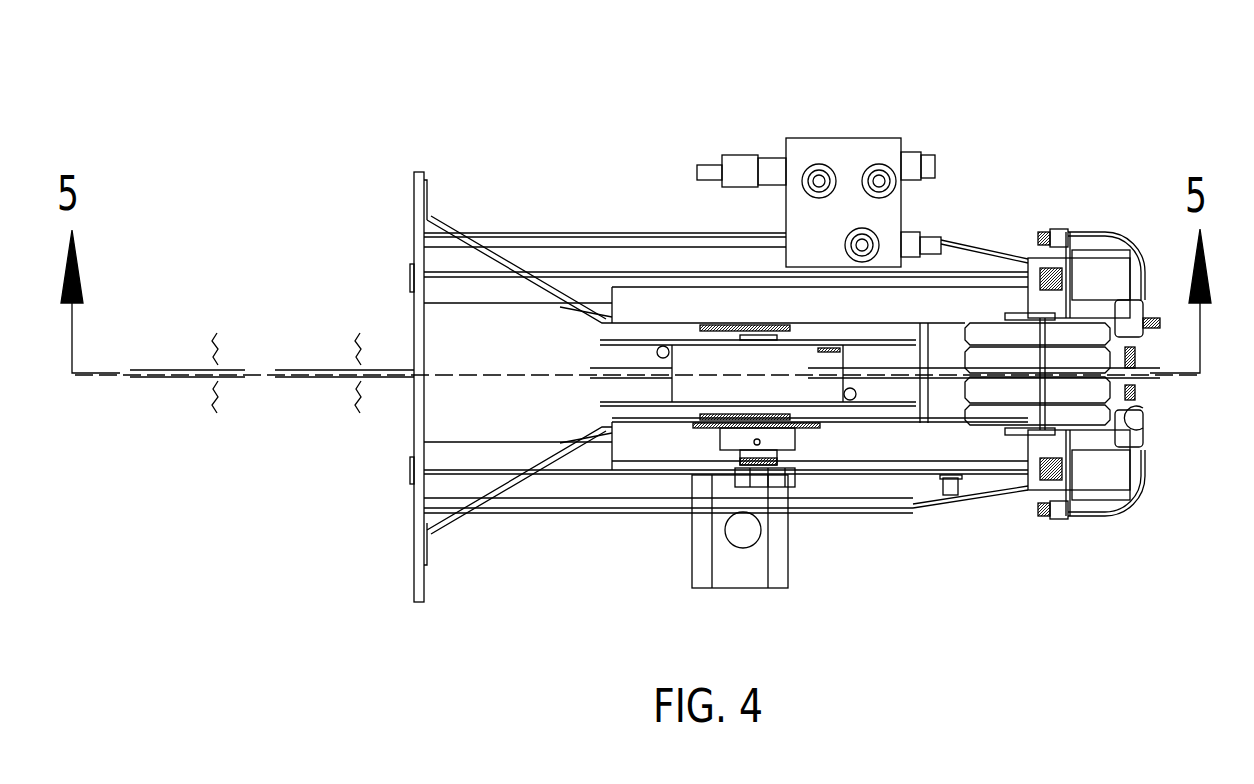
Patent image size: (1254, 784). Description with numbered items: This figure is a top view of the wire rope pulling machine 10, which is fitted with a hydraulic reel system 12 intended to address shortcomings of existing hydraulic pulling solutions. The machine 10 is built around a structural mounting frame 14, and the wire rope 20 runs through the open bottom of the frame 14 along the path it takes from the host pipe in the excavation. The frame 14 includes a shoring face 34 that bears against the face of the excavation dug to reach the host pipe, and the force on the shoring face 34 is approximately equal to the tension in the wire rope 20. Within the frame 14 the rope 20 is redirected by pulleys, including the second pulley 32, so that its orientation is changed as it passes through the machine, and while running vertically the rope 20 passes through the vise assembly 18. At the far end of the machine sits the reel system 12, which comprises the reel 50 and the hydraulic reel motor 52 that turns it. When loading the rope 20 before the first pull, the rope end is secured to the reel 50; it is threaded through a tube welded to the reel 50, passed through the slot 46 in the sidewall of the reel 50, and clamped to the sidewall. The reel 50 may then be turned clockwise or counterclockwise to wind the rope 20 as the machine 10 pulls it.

The wire rope pulling machine 10 is at (1017, 88).
The hydraulic reel system 12 is at (632, 537).
The structural mounting frame 14 is at (532, 242).
The vise assembly 18 is at (1102, 277).
The wire rope 20 is at (153, 370).
The second pulley 32 is at (1040, 437).
The shoring face 34 is at (412, 200).
The slot 46 is at (657, 348).
The reel 50 is at (705, 358).
The hydraulic reel motor 52 is at (852, 148).